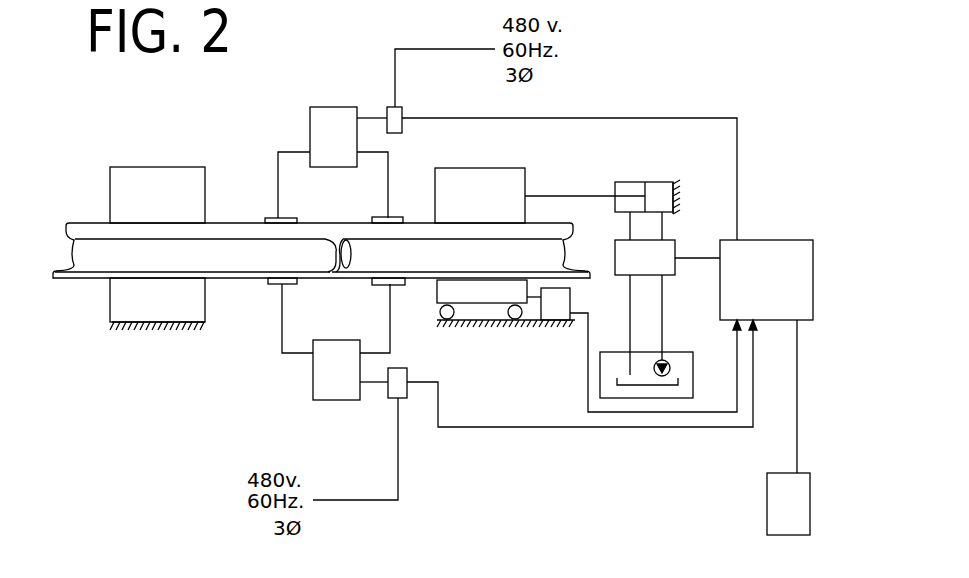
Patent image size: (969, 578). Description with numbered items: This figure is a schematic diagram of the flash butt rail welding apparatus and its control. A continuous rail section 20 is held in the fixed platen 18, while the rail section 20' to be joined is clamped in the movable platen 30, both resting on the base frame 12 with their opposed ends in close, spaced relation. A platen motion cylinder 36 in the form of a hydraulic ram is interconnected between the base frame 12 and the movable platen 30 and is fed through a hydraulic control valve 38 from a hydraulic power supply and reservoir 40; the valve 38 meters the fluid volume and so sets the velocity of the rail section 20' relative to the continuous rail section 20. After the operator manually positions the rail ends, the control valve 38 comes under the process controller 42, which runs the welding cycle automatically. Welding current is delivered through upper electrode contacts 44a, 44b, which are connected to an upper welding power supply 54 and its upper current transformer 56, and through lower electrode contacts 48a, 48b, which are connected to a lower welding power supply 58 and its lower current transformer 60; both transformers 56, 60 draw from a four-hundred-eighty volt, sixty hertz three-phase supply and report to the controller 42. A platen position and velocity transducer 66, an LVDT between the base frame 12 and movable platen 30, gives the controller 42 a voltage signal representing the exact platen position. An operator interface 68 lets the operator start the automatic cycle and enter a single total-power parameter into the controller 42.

The base frame 12 is at (152, 331).
The fixed platen 18 is at (104, 195).
The continuous rail section 20 is at (184, 281).
The rail section 20' is at (461, 281).
The movable platen 30 is at (480, 168).
The platen motion cylinder 36 is at (658, 182).
The hydraulic control valve 38 is at (663, 258).
The hydraulic power supply and reservoir 40 is at (660, 358).
The process controller 42 is at (768, 258).
The upper electrode contact 44a is at (278, 218).
The upper electrode contact 44b is at (393, 217).
The lower electrode contact 48a is at (278, 285).
The lower electrode contact 48b is at (380, 285).
The upper welding power supply 54 is at (318, 130).
The upper welding power supply current transformer 56 is at (390, 107).
The lower welding power supply 58 is at (320, 390).
The lower welding power supply current transformer 60 is at (407, 370).
The platen position and velocity transducer 66 is at (557, 313).
The operator interface 68 is at (770, 500).